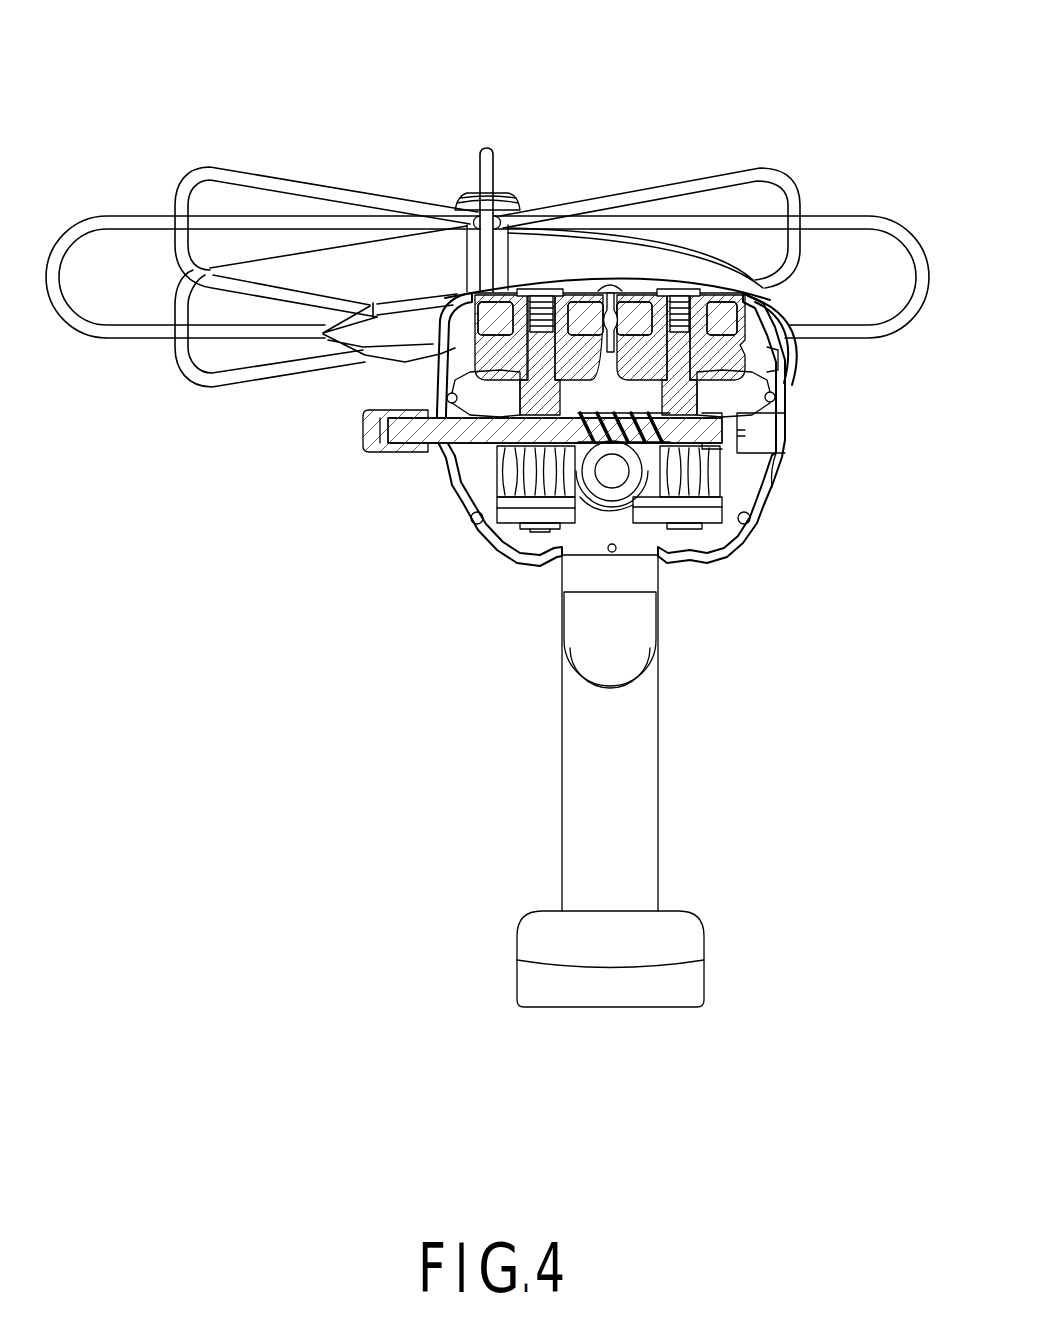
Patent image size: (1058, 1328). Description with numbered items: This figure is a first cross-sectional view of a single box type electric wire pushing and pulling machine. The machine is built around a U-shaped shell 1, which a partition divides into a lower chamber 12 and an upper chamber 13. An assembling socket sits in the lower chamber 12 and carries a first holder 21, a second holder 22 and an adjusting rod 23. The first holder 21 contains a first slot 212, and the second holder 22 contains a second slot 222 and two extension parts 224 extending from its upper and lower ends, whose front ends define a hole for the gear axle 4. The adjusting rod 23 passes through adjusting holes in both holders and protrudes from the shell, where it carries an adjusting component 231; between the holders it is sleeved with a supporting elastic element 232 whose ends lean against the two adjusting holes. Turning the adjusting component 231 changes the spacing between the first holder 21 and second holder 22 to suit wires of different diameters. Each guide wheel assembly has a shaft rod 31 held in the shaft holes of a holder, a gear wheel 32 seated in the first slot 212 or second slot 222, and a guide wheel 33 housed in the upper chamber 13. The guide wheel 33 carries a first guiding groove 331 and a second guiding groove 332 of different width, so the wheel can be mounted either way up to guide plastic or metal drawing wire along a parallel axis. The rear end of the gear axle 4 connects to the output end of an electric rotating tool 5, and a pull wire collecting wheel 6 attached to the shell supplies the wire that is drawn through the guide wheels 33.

The U-shaped shell 1 is at (758, 527).
The lower chamber 12 is at (772, 487).
The upper chamber 13 is at (785, 413).
The first holder 21 is at (439, 599).
The first slot 212 is at (487, 508).
The second holder 22 is at (743, 603).
The second slot 222 is at (760, 512).
The extension part 224 is at (616, 552).
The adjusting rod 23 is at (440, 450).
The adjusting component 231 is at (402, 452).
The supporting elastic element 232 is at (780, 460).
The shaft rod 31 is at (753, 345).
The gear wheel 32 is at (540, 478).
The guide wheel 33 is at (713, 297).
The first guiding groove 331 is at (790, 300).
The second guiding groove 332 is at (783, 372).
The gear axle 4 is at (603, 485).
The electric rotating tool 5 is at (640, 780).
The pull wire collecting wheel 6 is at (548, 205).